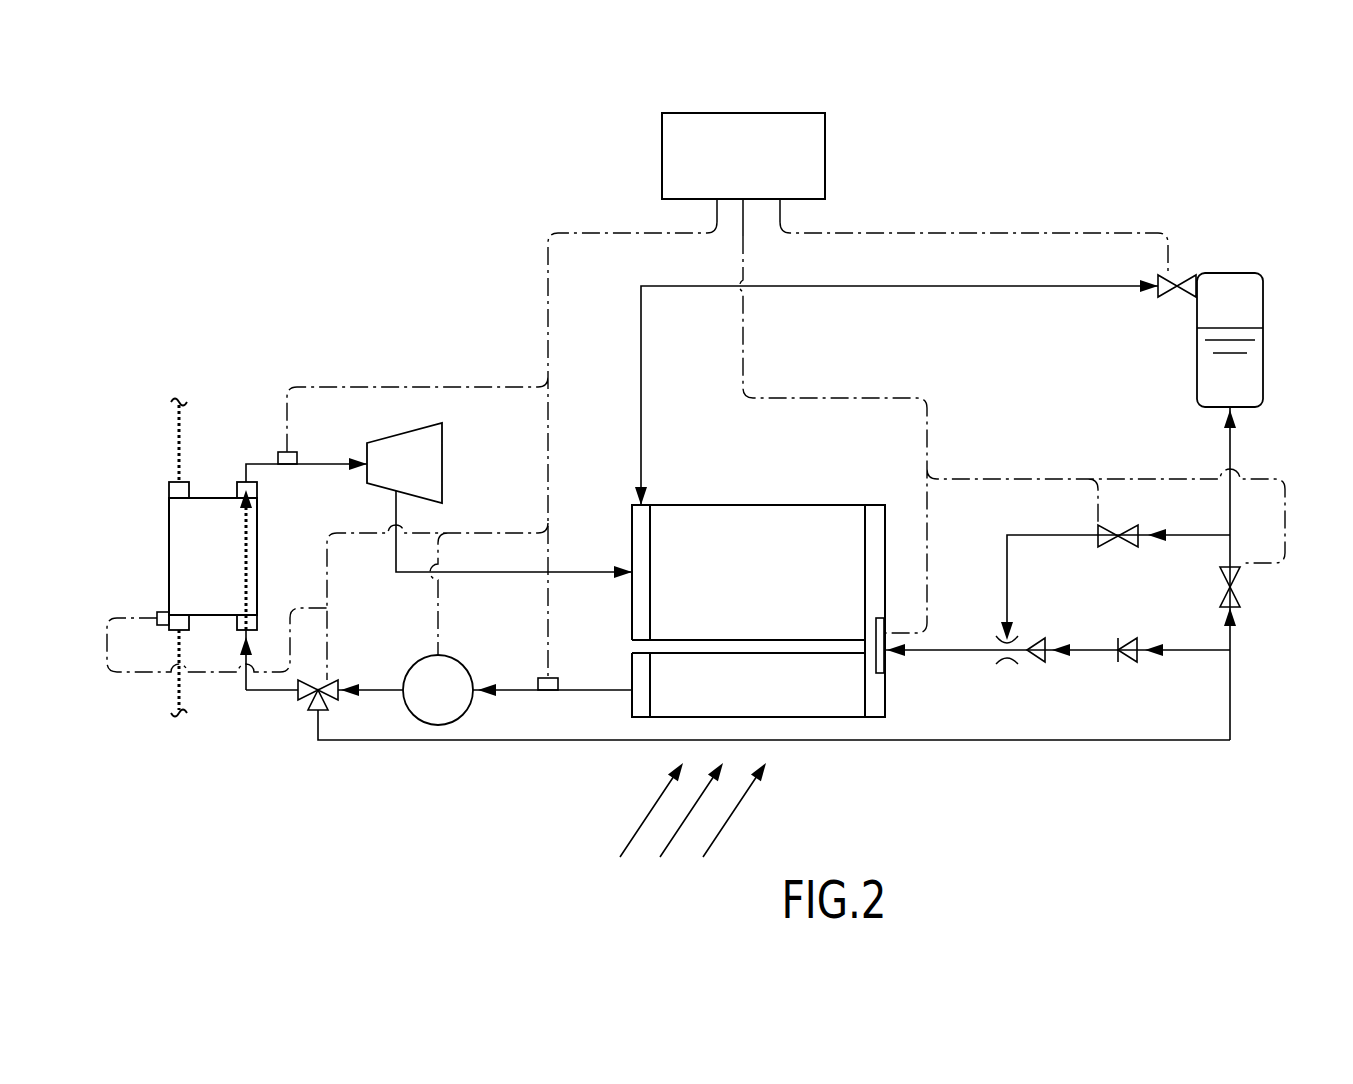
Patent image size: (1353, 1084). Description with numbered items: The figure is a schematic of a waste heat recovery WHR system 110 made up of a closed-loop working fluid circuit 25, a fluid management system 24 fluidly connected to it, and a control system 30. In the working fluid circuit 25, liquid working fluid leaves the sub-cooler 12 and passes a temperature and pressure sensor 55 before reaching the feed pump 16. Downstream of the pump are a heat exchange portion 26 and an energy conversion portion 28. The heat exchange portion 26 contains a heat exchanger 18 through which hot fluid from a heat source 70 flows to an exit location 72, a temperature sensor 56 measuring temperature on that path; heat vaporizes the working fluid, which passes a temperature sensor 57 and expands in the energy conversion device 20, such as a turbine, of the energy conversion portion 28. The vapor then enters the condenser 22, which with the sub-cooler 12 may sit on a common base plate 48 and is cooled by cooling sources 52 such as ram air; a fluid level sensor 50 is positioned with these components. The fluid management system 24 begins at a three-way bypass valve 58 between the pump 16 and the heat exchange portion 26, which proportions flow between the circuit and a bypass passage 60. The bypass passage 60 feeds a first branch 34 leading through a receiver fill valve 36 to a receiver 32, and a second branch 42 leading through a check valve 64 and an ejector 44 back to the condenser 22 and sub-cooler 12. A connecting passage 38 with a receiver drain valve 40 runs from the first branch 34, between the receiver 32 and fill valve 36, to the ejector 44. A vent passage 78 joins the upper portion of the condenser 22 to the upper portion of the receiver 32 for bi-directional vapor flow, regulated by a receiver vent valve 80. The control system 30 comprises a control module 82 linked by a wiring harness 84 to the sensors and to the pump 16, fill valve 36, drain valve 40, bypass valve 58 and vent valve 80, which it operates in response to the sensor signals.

The sub-cooler 12 is at (804, 608).
The feed pump 16 is at (407, 712).
The heat exchanger 18 is at (169, 555).
The energy conversion device 20 is at (372, 492).
The condenser 22 is at (722, 505).
The fluid management system 24 is at (1100, 775).
The working fluid circuit 25 is at (417, 310).
The heat exchange portion 26 is at (138, 372).
The energy conversion portion 28 is at (385, 405).
The control system 30 is at (677, 154).
The receiver 32 is at (1265, 290).
The first branch 34 is at (1228, 456).
The receiver fill valve 36 is at (1240, 580).
The connecting passage 38 is at (1007, 567).
The receiver drain valve 40 is at (1100, 532).
The second branch 42 is at (963, 650).
The ejector 44 is at (1012, 660).
The common base plate 48 is at (887, 703).
The fluid level sensor 50 is at (886, 663).
The cooling sources 52 is at (604, 812).
The temperature and pressure sensor 55 is at (550, 678).
The temperature sensor 56 is at (157, 618).
The temperature sensor 57 is at (278, 452).
The bypass valve 58 is at (310, 698).
The bypass passage 60 is at (440, 742).
The check valve 64 is at (1130, 665).
The heat source 70 is at (186, 398).
The exit location 72 is at (183, 718).
The vent passage 78 is at (983, 288).
The receiver vent valve 80 is at (1166, 300).
The control module 82 is at (756, 171).
The wiring harness 84 is at (840, 212).
The WHR system 110 is at (1180, 198).